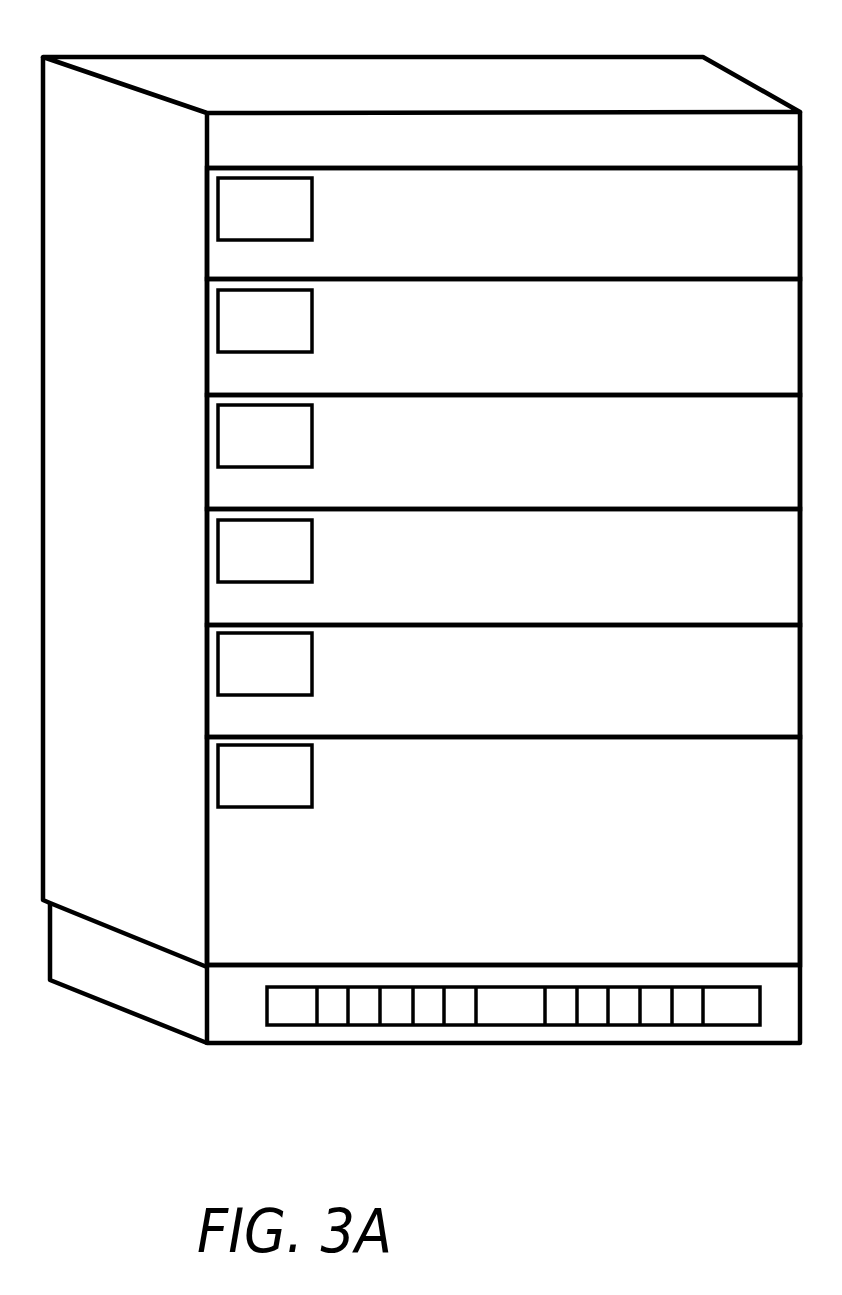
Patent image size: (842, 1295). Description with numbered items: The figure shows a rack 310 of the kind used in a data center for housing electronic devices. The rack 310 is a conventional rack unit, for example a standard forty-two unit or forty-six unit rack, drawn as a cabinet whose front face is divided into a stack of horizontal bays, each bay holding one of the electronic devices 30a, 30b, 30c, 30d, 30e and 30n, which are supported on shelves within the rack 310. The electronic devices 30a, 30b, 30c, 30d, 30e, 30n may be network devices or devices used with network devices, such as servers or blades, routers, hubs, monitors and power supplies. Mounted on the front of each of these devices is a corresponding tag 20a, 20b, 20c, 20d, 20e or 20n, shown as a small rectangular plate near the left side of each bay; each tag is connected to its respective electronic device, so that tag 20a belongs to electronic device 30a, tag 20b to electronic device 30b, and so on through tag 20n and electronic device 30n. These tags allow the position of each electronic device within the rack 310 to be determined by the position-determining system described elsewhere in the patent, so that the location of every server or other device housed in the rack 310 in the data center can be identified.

The rack 310 is at (638, 71).
The tag 20a is at (295, 216).
The tag 20b is at (295, 329).
The tag 20c is at (295, 444).
The tag 20d is at (295, 559).
The tag 20e is at (295, 672).
The tag 20n is at (295, 784).
The electronic device 30a is at (789, 270).
The electronic device 30b is at (789, 386).
The electronic device 30c is at (789, 498).
The electronic device 30d is at (789, 613).
The electronic device 30e is at (789, 726).
The electronic device 30n is at (789, 953).